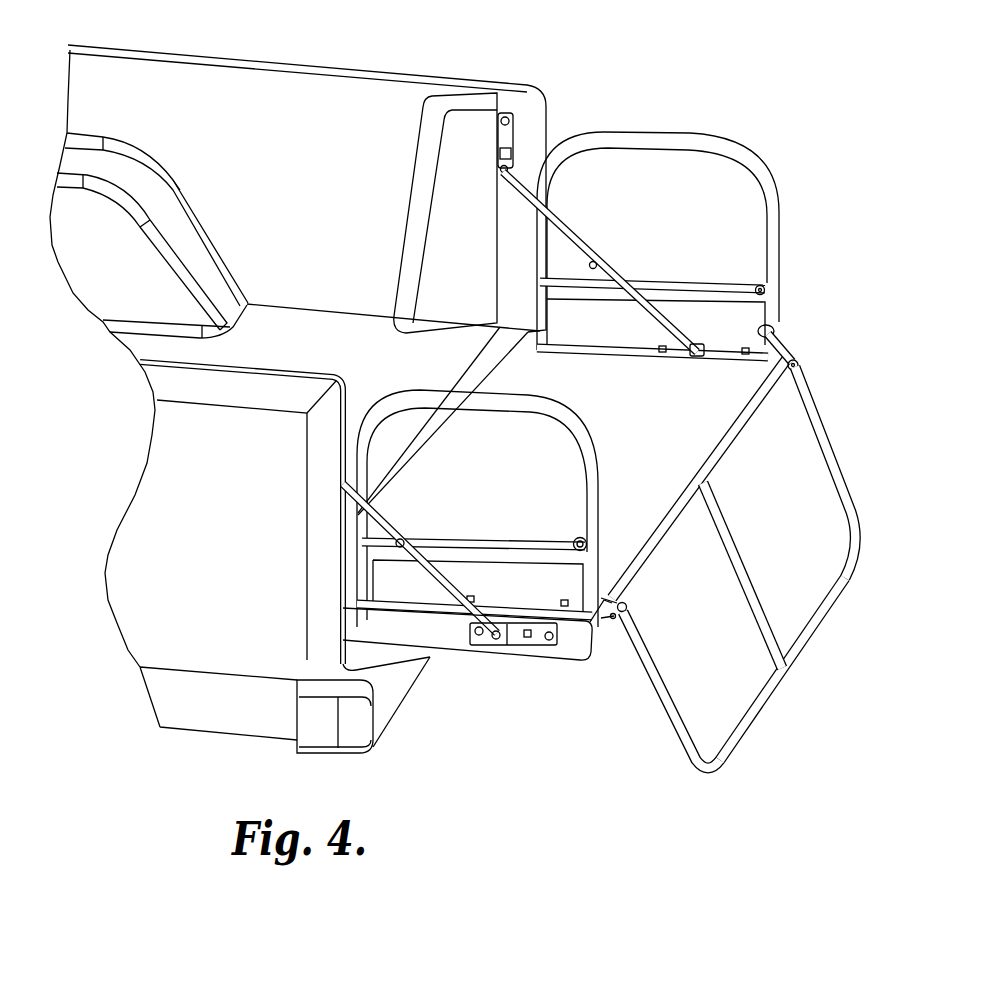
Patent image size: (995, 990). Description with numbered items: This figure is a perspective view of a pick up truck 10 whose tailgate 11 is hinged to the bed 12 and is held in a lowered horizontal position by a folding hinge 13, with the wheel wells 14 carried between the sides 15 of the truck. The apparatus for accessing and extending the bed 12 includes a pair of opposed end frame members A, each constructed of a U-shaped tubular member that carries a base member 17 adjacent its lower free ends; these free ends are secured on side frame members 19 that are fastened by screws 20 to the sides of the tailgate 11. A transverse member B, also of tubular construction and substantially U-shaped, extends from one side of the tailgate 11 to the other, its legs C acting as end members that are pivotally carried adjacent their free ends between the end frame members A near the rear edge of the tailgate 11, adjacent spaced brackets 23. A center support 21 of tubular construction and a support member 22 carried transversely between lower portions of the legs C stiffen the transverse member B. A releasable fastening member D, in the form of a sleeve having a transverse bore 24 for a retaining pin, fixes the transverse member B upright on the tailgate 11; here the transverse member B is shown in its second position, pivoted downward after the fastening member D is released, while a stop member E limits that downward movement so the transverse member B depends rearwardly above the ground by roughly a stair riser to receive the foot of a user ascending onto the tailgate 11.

The pick up truck 10 is at (241, 60).
The tailgate 11 is at (443, 463).
The truck bed 12 is at (299, 322).
The folding hinge 13 is at (576, 246).
The wheel well 14 is at (152, 178).
The side 15 is at (340, 82).
The base member 17 is at (670, 290).
The side frame member 19 is at (443, 622).
The screw 20 is at (572, 348).
The center support 21 is at (750, 600).
The support member 22 is at (731, 436).
The bracket 23 is at (578, 627).
The bore 24 is at (577, 541).
The end frame member A is at (665, 133).
The transverse member B is at (790, 666).
The leg C is at (812, 416).
The releasable fastening member D is at (581, 538).
The stop member E is at (607, 628).